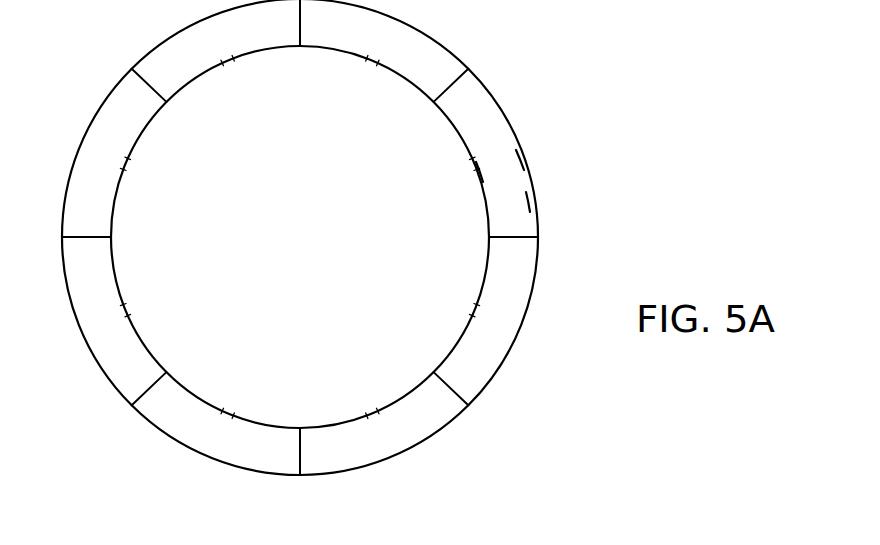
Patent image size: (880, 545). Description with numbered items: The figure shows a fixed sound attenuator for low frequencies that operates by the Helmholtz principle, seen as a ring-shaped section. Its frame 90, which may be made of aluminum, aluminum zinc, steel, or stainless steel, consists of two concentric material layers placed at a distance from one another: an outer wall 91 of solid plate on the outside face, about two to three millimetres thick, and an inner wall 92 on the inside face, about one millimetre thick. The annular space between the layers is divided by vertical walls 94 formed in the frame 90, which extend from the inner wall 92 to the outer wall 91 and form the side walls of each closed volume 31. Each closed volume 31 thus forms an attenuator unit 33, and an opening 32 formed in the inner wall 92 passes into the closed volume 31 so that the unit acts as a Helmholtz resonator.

The closed volume 31 is at (521, 161).
The opening 32 is at (480, 171).
The attenuator unit 33 is at (527, 201).
The frame 90 is at (490, 386).
The outer wall 91 is at (452, 428).
The inner wall 92 is at (414, 388).
The vertical wall 94 is at (147, 387).